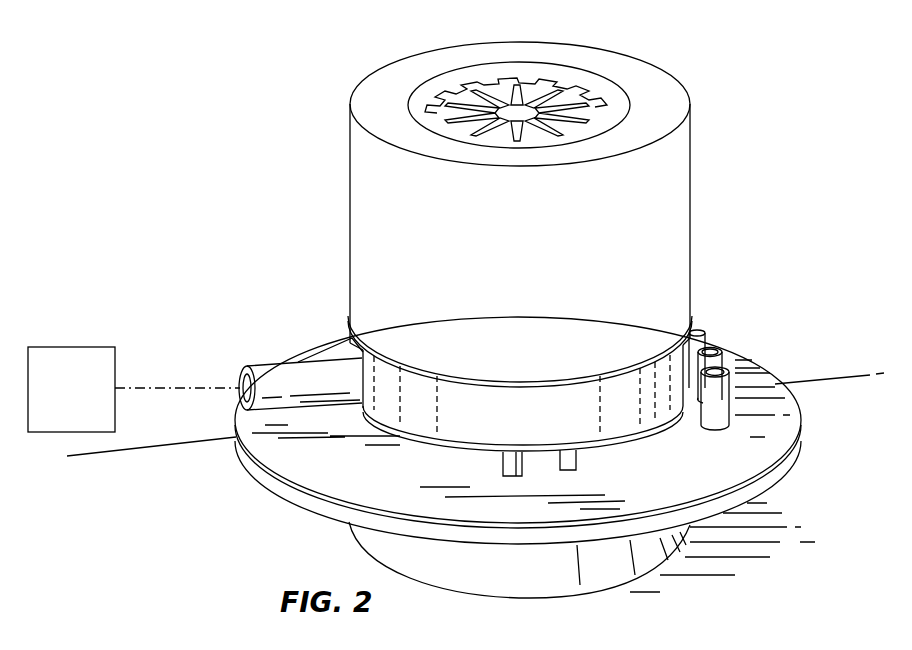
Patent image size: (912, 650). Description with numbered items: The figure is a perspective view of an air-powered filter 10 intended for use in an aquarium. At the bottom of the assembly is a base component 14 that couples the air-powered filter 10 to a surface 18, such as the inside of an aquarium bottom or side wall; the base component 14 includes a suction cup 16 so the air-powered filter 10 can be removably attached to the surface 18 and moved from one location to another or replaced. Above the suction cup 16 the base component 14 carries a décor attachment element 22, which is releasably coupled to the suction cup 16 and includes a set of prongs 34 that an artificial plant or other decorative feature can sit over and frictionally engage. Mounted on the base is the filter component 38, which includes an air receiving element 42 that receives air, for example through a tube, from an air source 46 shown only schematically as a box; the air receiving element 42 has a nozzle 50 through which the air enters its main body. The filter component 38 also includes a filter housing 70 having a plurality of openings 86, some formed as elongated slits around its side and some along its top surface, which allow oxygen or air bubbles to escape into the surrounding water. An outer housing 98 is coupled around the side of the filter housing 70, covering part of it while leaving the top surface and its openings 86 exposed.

The air-powered filter 10 is at (279, 78).
The base component 14 is at (291, 517).
The suction cup 16 is at (603, 598).
The surface 18 is at (722, 476).
The décor attachment element 22 is at (241, 455).
The prongs 34 is at (693, 333).
The filter component 38 is at (331, 219).
The air receiving element 42 is at (259, 367).
The air source 46 is at (134, 389).
The nozzle 50 is at (318, 372).
The filter housing 70 is at (622, 404).
The openings 86 is at (515, 107).
The outer housing 98 is at (676, 158).